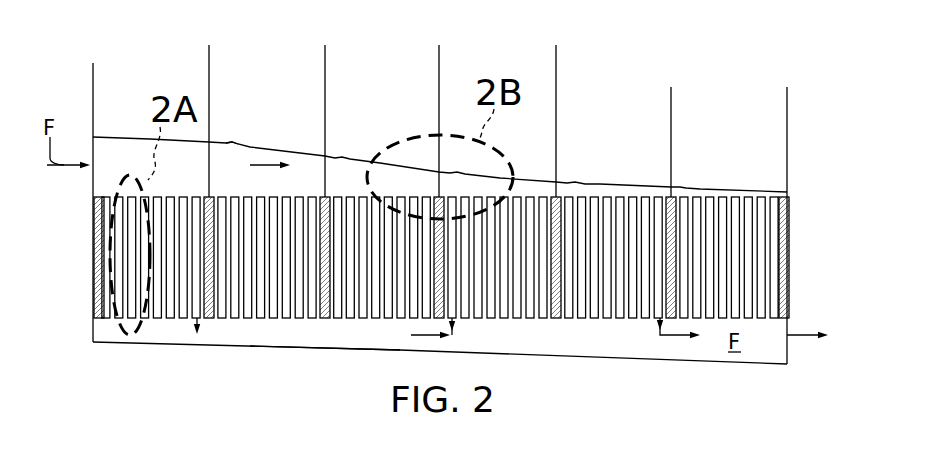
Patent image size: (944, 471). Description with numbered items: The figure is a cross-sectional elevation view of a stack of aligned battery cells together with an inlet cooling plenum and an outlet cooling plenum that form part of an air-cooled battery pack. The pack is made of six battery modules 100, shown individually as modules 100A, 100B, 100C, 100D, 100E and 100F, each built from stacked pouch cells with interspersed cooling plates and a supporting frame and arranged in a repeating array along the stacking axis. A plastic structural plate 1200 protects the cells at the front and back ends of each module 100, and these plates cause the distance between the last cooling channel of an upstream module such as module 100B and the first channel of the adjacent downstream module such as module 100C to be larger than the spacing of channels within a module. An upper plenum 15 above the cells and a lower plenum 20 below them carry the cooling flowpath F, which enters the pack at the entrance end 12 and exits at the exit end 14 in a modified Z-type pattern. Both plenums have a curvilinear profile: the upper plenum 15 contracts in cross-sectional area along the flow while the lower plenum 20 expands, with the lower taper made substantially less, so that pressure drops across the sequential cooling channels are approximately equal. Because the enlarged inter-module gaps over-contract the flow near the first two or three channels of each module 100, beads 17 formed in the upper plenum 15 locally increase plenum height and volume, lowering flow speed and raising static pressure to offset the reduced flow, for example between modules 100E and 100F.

The entrance end 12 is at (91, 350).
The exit end 14 is at (787, 179).
The upper plenum 15 is at (114, 138).
The beads 17 is at (232, 142).
The lower plenum 20 is at (593, 349).
The battery module 100 is at (186, 380).
The structural plate 1200 is at (322, 320).
The first battery module 100A is at (95, 65).
The second battery module 100B is at (211, 46).
The third battery module 100C is at (327, 100).
The fourth battery module 100D is at (554, 46).
The fifth battery module 100E is at (669, 124).
The sixth battery module 100F is at (673, 91).